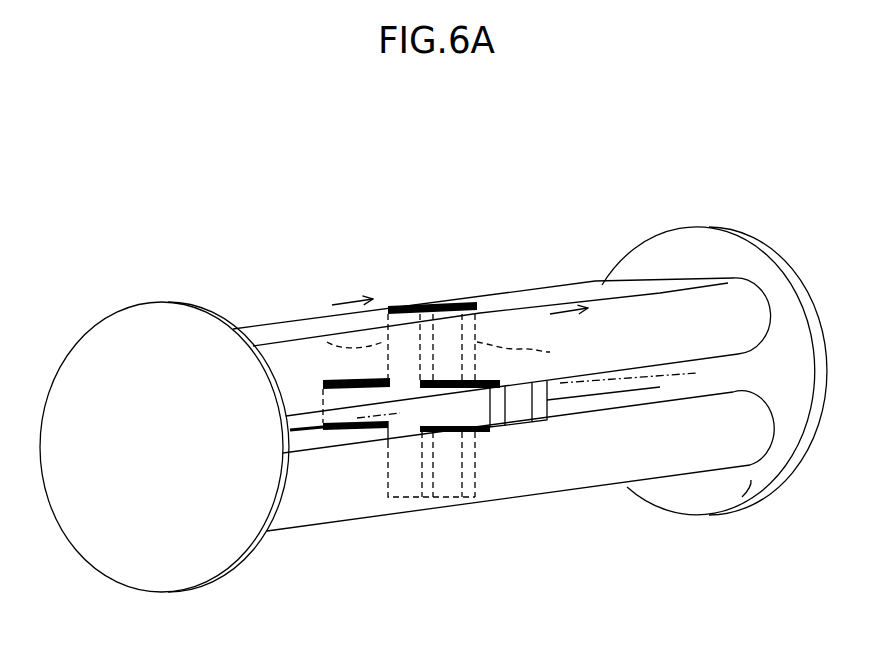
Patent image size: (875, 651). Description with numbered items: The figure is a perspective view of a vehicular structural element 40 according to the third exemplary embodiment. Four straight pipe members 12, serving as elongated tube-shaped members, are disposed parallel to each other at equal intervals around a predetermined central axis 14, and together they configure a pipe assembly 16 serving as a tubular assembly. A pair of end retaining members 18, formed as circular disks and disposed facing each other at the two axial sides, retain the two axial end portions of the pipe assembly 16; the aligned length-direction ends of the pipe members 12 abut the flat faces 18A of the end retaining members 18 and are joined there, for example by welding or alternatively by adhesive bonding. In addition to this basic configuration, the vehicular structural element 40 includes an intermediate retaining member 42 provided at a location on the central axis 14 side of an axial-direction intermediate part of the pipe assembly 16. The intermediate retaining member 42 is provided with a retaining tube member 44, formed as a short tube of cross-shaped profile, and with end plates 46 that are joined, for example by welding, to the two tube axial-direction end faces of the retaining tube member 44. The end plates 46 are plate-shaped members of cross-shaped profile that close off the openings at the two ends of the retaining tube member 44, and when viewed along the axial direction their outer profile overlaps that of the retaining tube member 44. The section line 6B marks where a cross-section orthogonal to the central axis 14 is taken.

The vehicular structural element 40 is at (573, 153).
The end retaining member 18 is at (147, 300).
The flat face 18A is at (745, 497).
The pipe assembly 16 is at (493, 273).
The pipe member 12 is at (682, 292).
The central axis 14 is at (323, 427).
The intermediate retaining member 42 is at (527, 443).
The retaining tube member 44 is at (519, 417).
The end plate 46 is at (310, 324).
The section line 6B- 6B is at (360, 300).